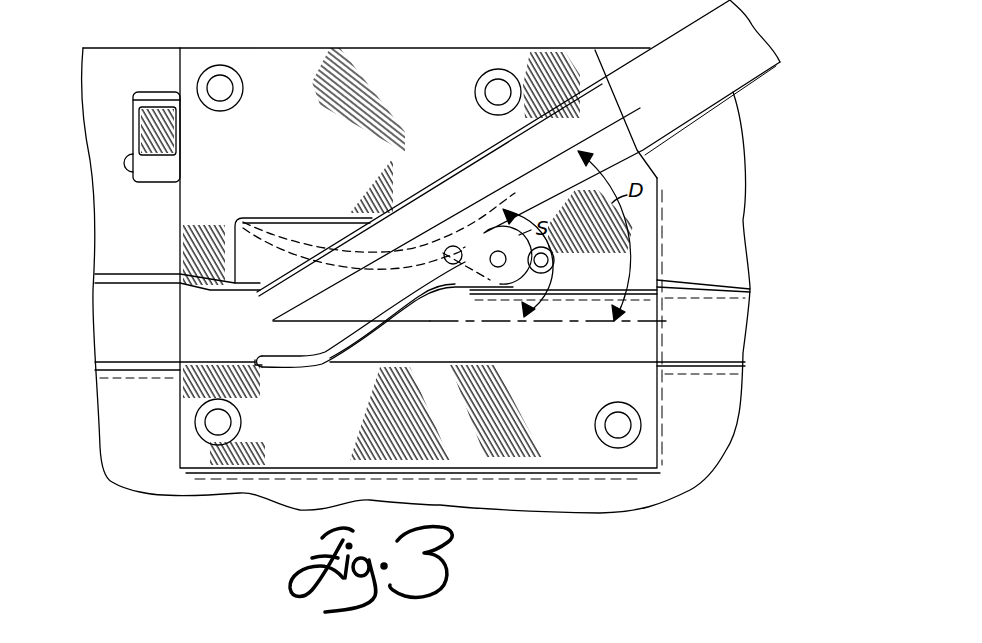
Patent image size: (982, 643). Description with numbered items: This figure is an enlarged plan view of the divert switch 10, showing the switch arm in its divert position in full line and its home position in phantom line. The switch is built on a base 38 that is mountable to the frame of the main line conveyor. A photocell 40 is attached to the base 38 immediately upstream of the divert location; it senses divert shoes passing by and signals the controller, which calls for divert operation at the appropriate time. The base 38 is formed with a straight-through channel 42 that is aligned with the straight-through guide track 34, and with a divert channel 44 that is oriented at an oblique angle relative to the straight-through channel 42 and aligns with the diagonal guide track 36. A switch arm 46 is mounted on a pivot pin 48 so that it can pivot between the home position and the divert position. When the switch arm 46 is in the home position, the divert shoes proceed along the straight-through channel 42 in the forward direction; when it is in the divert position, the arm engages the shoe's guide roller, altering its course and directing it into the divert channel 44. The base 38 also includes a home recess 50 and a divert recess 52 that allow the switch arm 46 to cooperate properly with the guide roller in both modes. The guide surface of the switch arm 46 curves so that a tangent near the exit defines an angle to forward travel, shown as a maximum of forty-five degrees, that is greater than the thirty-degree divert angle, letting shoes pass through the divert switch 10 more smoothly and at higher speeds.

The divert switch 10 is at (418, 137).
The straight-through guide track 34 is at (702, 338).
The diagonal guide track 36 is at (683, 74).
The base 38 is at (335, 440).
The photocell 40 is at (138, 99).
The straight-through channel 42 is at (640, 317).
The divert channel 44 is at (568, 130).
The switch arm 46 is at (320, 353).
The pivot pin 48 is at (497, 268).
The home recess 50 is at (300, 218).
The divert recess 52 is at (283, 370).